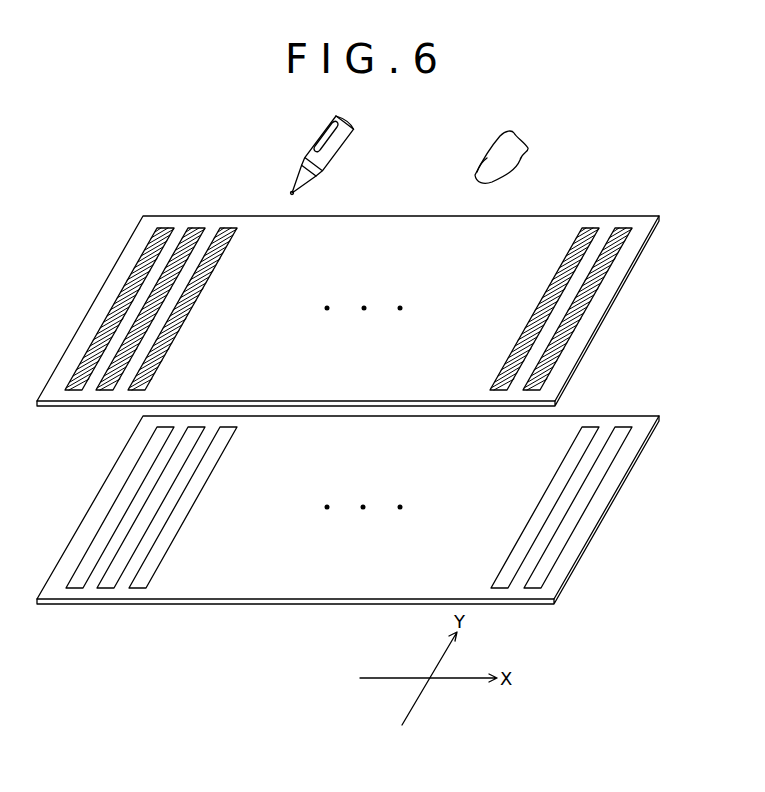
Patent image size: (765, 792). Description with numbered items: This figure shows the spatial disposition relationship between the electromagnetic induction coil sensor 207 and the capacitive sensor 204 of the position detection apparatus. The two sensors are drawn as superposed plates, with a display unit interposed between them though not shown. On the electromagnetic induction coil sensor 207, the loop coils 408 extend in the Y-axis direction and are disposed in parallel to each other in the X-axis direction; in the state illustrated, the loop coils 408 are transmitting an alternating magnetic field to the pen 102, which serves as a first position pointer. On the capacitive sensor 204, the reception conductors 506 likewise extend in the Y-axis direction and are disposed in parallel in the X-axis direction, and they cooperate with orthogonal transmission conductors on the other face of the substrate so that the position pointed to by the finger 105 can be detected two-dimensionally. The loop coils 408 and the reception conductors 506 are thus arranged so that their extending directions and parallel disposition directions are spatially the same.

The pen 102 is at (337, 152).
The finger 105 is at (505, 167).
The capacitive sensor 204 is at (619, 215).
The electromagnetic induction coil sensor 207 is at (619, 415).
The loop coils 408 is at (603, 483).
The reception conductors 506 is at (145, 263).